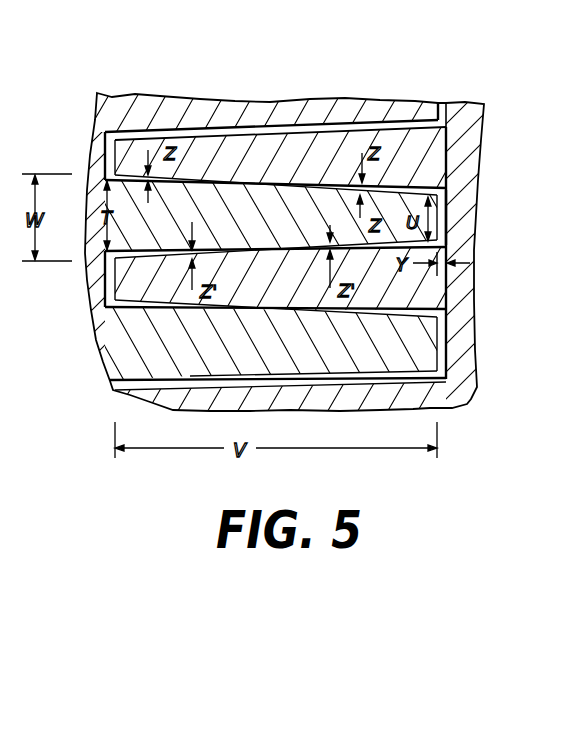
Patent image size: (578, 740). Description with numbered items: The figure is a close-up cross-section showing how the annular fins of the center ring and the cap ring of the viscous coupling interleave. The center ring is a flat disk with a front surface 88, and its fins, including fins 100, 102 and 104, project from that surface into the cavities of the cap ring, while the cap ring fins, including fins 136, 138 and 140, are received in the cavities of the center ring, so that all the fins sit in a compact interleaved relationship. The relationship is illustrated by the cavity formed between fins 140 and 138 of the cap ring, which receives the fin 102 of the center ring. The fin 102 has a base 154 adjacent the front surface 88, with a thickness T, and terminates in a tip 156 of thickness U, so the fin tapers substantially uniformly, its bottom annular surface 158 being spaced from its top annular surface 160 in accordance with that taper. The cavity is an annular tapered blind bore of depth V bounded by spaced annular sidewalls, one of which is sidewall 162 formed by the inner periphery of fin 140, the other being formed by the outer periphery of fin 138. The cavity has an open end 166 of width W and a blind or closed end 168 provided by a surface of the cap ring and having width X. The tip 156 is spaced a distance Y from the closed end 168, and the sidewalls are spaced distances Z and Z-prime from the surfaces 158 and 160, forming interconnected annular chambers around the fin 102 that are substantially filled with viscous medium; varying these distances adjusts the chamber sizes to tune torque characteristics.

The front surface 88 is at (100, 140).
The fin 100 is at (276, 358).
The fin 102 is at (268, 228).
The fin 104 is at (277, 111).
The fin 136 is at (337, 398).
The fin 138 is at (291, 292).
The fin 140 is at (276, 166).
The base 154 is at (88, 203).
The tip 156 is at (440, 231).
The bottom annular surface 158 is at (337, 207).
The top annular surface 160 is at (118, 224).
The sidewall 162 is at (323, 183).
The open end 166 is at (103, 177).
The closed end 168 is at (447, 212).